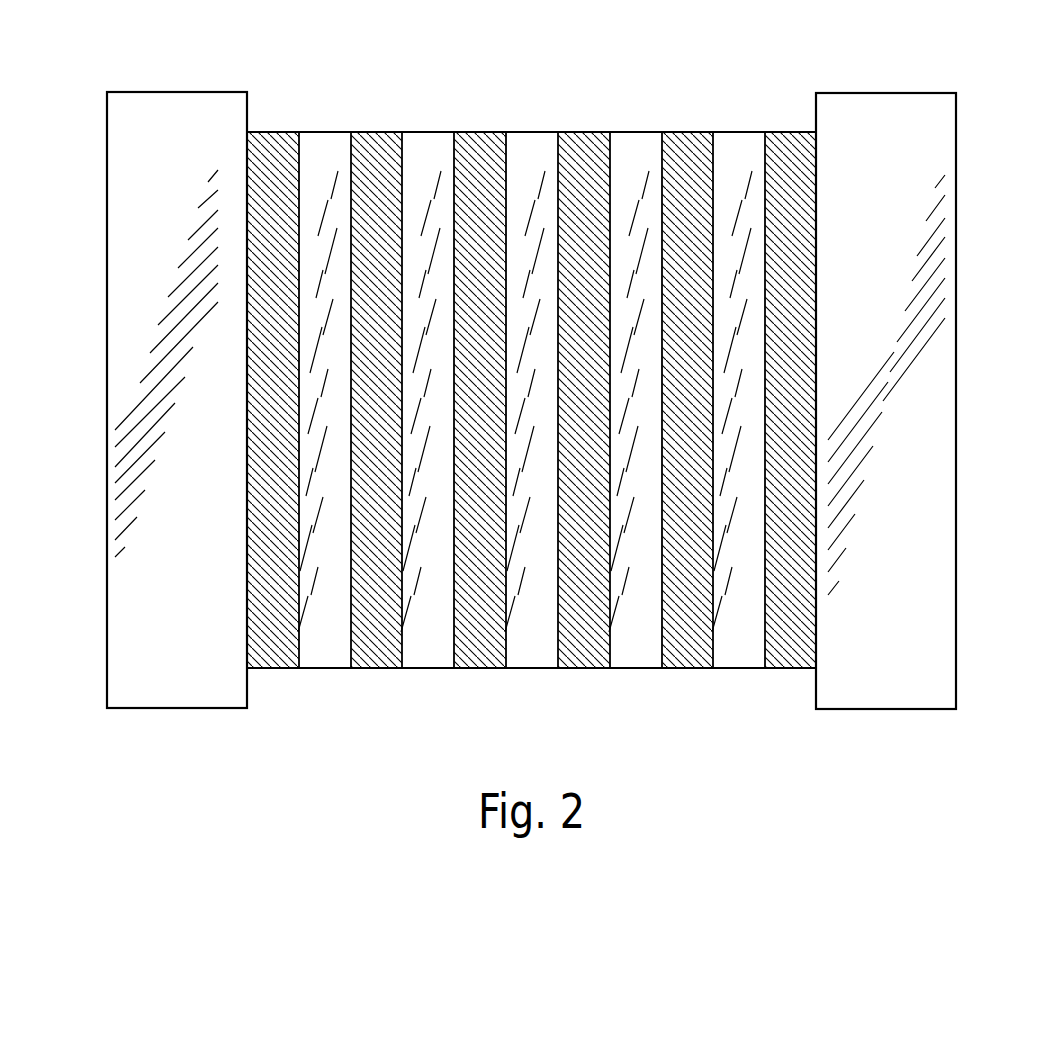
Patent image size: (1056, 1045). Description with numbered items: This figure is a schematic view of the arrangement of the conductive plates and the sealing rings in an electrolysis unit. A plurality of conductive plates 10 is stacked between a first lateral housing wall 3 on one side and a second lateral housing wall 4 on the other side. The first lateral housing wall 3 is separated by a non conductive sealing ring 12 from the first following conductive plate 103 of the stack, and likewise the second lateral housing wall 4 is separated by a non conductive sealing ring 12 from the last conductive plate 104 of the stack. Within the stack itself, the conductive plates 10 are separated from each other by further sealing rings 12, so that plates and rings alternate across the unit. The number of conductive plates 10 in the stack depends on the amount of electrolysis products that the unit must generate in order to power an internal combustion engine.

The first lateral housing wall 3 is at (155, 663).
The second lateral housing wall 4 is at (937, 515).
The conductive plates 10 is at (434, 150).
The first following conductive plate 103 is at (326, 150).
The last conductive plate 104 is at (744, 156).
The non conductive sealing ring 12 is at (590, 150).